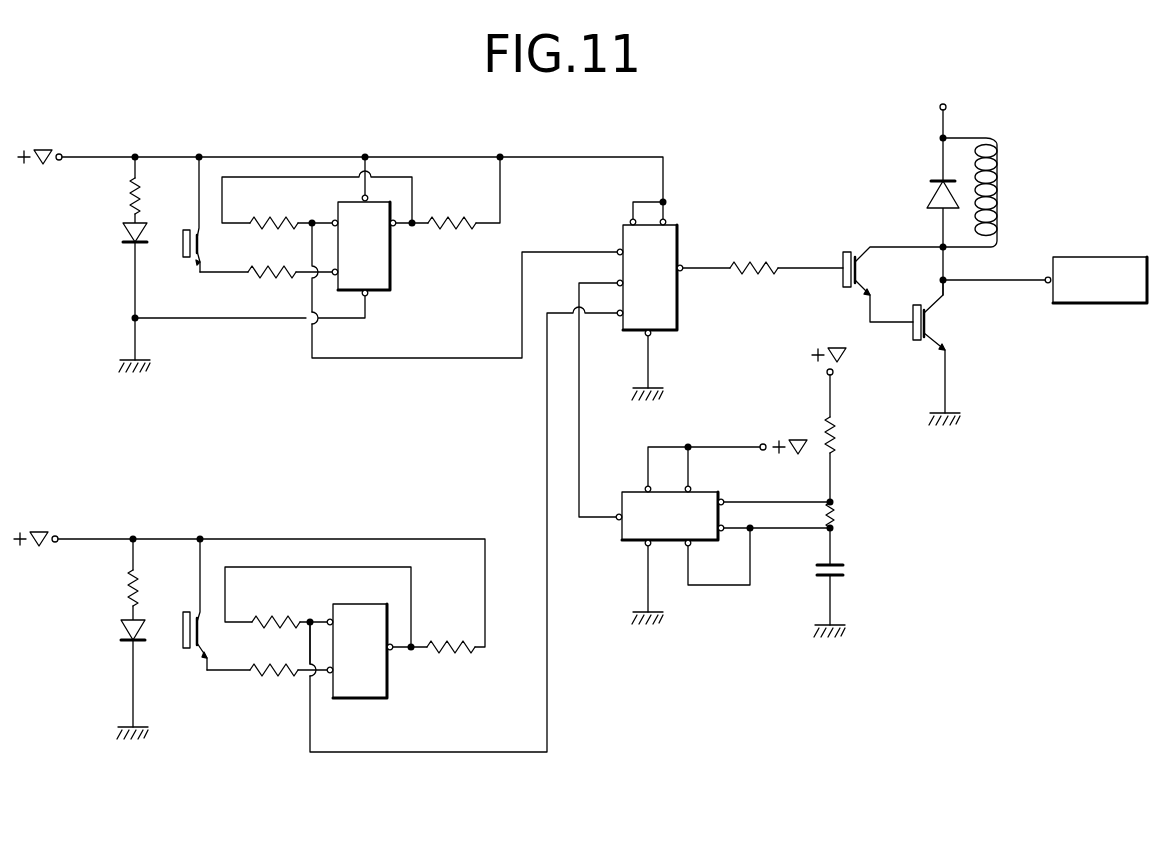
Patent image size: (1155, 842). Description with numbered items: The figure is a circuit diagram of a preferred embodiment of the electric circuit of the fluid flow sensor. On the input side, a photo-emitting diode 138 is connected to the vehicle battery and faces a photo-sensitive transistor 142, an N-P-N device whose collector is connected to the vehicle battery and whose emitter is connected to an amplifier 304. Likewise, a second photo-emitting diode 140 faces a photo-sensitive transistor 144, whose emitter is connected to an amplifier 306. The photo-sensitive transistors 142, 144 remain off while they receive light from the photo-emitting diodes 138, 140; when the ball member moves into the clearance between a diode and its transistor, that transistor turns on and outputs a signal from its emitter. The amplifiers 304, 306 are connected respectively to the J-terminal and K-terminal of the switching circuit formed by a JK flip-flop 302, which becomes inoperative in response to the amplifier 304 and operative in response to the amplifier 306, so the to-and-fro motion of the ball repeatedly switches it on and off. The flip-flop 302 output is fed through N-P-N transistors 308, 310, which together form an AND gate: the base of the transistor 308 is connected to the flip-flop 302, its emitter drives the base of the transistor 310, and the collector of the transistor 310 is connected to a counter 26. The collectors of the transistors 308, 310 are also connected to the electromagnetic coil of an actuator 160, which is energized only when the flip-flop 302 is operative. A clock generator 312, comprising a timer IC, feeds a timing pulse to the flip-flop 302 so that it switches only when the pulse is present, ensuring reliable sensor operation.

The counter 26 is at (1045, 280).
The photo-emitting diode 138 is at (120, 632).
The photo-emitting diode 140 is at (126, 237).
The photo-sensitive transistor 142 is at (198, 630).
The photo-sensitive transistor 144 is at (197, 242).
The actuator 160 is at (999, 161).
The JK flip-flop 302 is at (650, 309).
The amplifier 304 is at (360, 651).
The amplifier 306 is at (372, 245).
The transistor 308 is at (863, 270).
The transistor 310 is at (924, 322).
The clock generator 312 is at (723, 532).